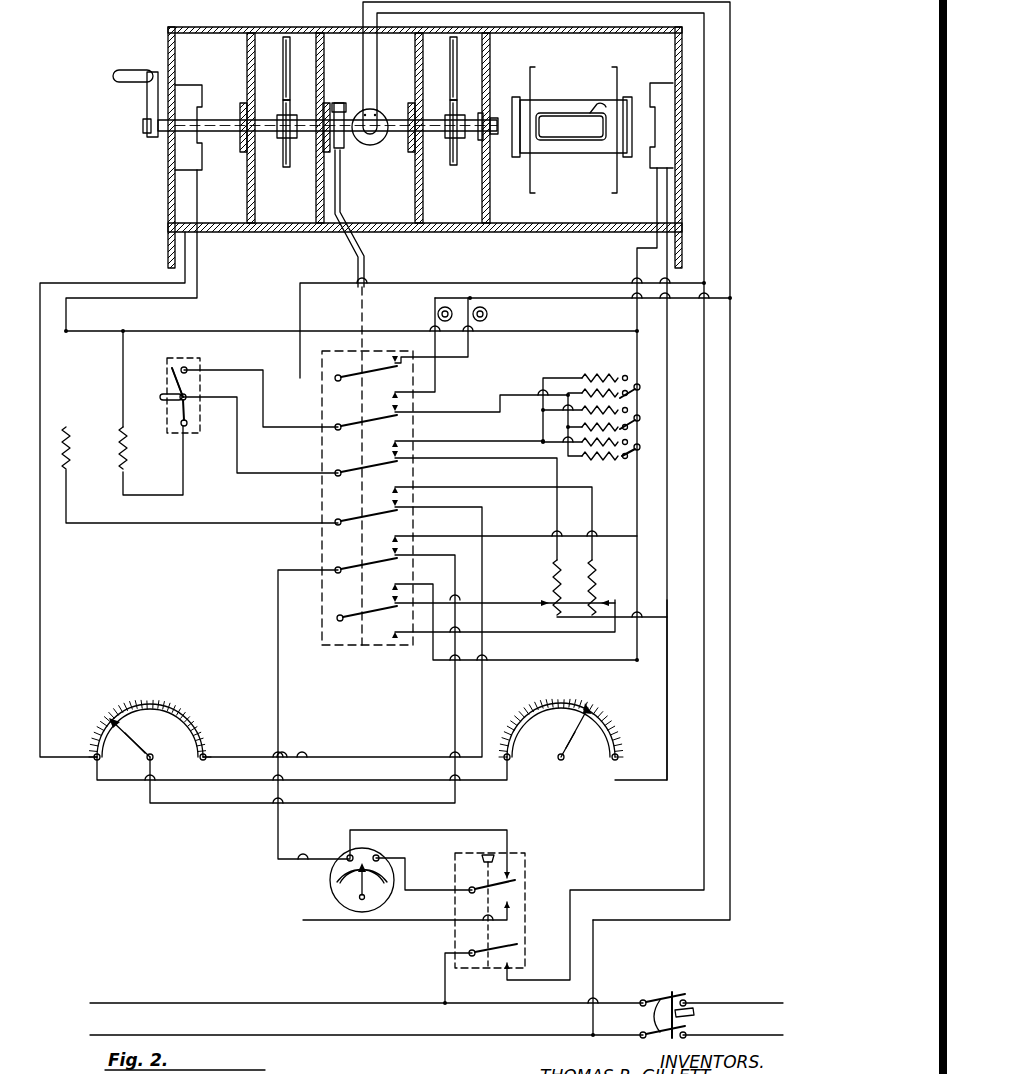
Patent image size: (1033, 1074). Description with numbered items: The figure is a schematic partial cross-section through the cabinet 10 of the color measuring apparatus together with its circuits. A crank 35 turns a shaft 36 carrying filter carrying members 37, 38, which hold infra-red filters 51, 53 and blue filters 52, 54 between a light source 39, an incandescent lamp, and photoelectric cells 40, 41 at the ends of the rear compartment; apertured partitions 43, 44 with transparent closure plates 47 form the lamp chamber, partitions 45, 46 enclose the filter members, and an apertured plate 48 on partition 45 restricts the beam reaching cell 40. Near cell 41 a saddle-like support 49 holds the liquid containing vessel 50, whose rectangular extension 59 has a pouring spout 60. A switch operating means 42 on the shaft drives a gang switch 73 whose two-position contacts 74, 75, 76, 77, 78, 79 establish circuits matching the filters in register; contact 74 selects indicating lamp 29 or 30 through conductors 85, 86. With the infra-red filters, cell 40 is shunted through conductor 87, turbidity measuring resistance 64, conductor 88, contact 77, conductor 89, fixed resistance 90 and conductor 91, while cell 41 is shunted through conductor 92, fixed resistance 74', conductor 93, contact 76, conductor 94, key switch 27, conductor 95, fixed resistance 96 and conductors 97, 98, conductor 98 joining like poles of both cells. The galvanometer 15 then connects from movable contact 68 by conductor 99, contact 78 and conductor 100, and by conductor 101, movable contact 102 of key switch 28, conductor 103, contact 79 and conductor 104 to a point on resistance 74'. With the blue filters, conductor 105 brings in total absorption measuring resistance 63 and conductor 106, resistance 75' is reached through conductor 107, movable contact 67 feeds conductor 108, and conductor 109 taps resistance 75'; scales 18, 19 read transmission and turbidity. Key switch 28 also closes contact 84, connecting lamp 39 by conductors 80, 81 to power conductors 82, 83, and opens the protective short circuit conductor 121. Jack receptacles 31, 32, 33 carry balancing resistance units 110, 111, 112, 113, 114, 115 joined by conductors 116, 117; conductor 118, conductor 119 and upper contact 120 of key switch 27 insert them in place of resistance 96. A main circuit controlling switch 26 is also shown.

The cabinet 10 is at (168, 37).
The zero balance galvanometer 15 is at (352, 882).
The calibrated scale 18 is at (588, 700).
The calibrated scale 19 is at (190, 708).
The main circuit controlling switch 26 is at (665, 992).
The key switch 27 is at (165, 395).
The key switch 28 is at (493, 856).
The indicating lamp 29 is at (437, 313).
The indicating lamp 30 is at (488, 315).
The jack receptacle 31 is at (640, 386).
The jack receptacle 32 is at (640, 417).
The jack receptacle 33 is at (640, 447).
The crank 35 is at (130, 84).
The shaft 36 is at (223, 128).
The filter carrying member 37 is at (287, 168).
The filter carrying member 38 is at (454, 166).
The light source 39 is at (383, 113).
The photoelectric cell 40 is at (185, 88).
The photoelectric cell 41 is at (665, 86).
The switch operating means 42 is at (342, 187).
The apertured partition 43 is at (324, 72).
The apertured partition 44 is at (415, 204).
The apertured partition 45 is at (247, 206).
The apertured partition 46 is at (490, 57).
The transparent closure plates 47 is at (333, 142).
The apertured plate 48 is at (243, 153).
The saddle-like support 49 is at (562, 99).
The liquid containing vessel 50 is at (614, 146).
The filter 51 is at (283, 152).
The filter 52 is at (283, 67).
The filter 53 is at (450, 150).
The filter 54 is at (450, 64).
The rectangular extension 59 is at (556, 146).
The pouring spout 60 is at (598, 110).
The calibrated measuring resistance 63 is at (543, 705).
The calibrated measuring resistance 64 is at (140, 706).
The relatively movable contact 67 is at (575, 738).
The relatively movable contact 68 is at (126, 733).
The gang switch 73 is at (322, 493).
The contact 74 is at (401, 353).
The contact 75 is at (366, 430).
The contact 76 is at (374, 479).
The contact 77 is at (374, 528).
The contact 78 is at (374, 576).
The contact 79 is at (374, 624).
The fixed resistance 74' is at (533, 586).
The fixed resistance 75' is at (613, 587).
The conductor 80 is at (731, 497).
The conductor 81 is at (704, 551).
The conductor 82 is at (735, 1003).
The conductor 83 is at (735, 1035).
The circuit controlling contact 84 is at (507, 945).
The conductor 85 is at (515, 283).
The conductor 86 is at (550, 307).
The conductor 87 is at (40, 445).
The conductor 88 is at (358, 757).
The conductor 89 is at (196, 523).
The fixed resistance 90 is at (68, 446).
The conductor 91 is at (118, 298).
The conductor 92 is at (668, 497).
The conductor 93 is at (493, 460).
The conductor 94 is at (238, 452).
The conductor 95 is at (158, 495).
The fixed resistance 96 is at (121, 462).
The conductor 97 is at (123, 367).
The conductor 98 is at (190, 331).
The conductor 99 is at (222, 803).
The conductor 100 is at (278, 643).
The conductor 101 is at (413, 888).
The movable contact 102 is at (510, 884).
The conductor 103 is at (388, 922).
The conductor 104 is at (497, 599).
The conductor 105 is at (190, 780).
The conductor 106 is at (613, 536).
The conductor 107 is at (514, 489).
The conductor 108 is at (668, 707).
The conductor 109 is at (545, 633).
The resistance unit 110 is at (613, 376).
The resistance unit 111 is at (573, 378).
The resistance unit 112 is at (630, 396).
The resistance unit 113 is at (632, 430).
The resistance unit 114 is at (590, 456).
The resistance unit 115 is at (630, 460).
The conductor 116 is at (457, 447).
The conductor 117 is at (445, 410).
The conductor 118 is at (645, 351).
The conductor 119 is at (264, 400).
The upper contact 120 is at (192, 378).
The conductor 121 is at (455, 830).